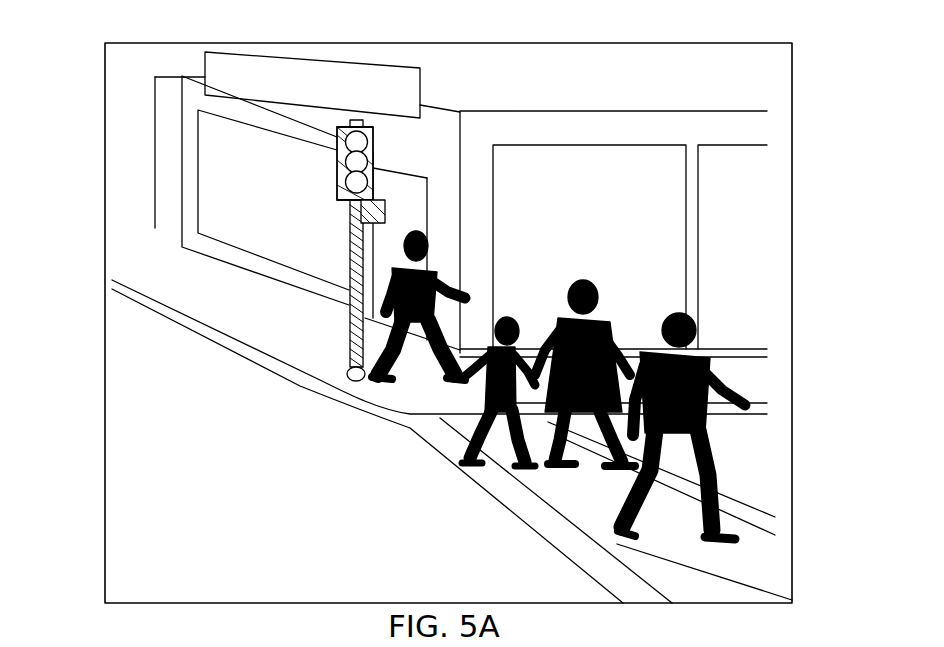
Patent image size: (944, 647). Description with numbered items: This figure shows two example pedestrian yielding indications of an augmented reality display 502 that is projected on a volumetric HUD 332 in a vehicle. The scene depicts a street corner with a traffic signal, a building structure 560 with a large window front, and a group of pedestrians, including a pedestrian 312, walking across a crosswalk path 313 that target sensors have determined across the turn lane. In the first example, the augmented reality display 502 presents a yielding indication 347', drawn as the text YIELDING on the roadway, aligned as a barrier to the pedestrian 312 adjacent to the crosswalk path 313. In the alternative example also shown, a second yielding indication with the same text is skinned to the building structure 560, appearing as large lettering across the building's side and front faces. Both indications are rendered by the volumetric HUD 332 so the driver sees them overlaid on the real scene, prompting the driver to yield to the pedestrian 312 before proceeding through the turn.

The augmented reality display 502 is at (121, 203).
The building structure 560 is at (663, 130).
The volumetric HUD 332 is at (805, 205).
The pedestrian 312 is at (692, 357).
The crosswalk path 313 is at (772, 569).
The yielding indication 347' is at (588, 485).